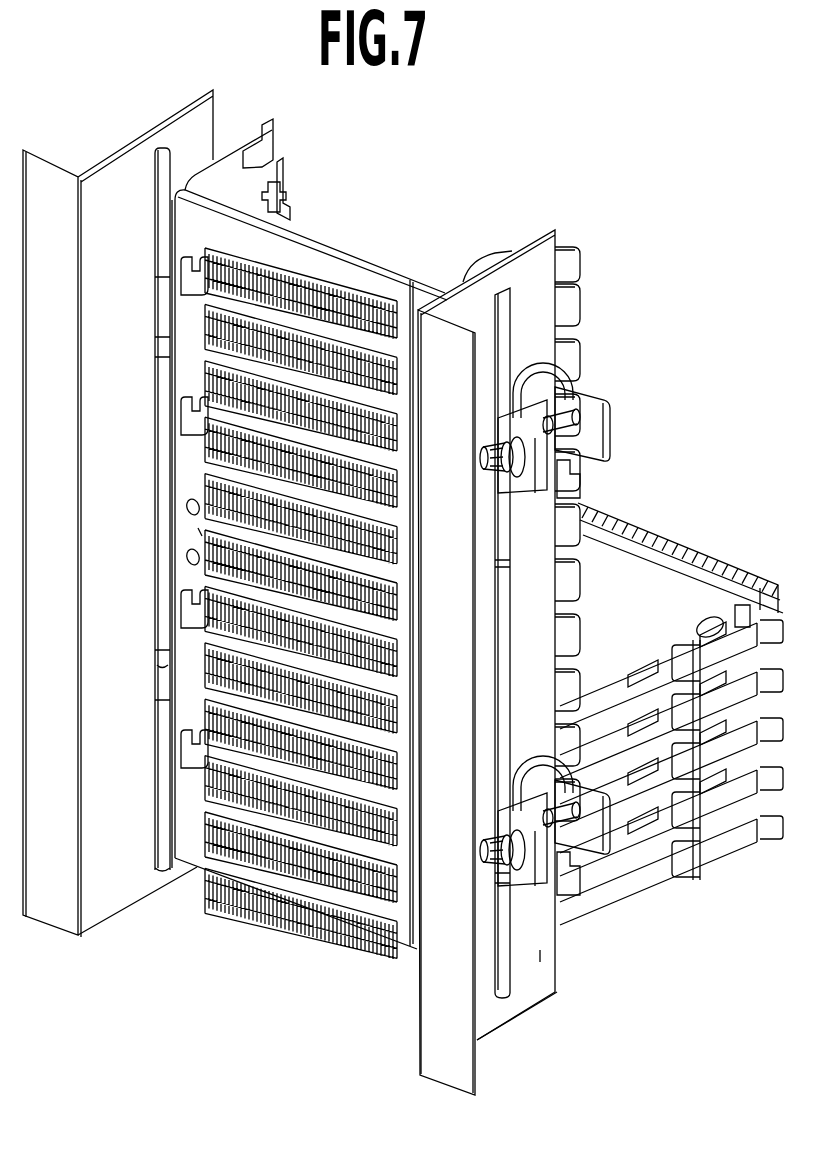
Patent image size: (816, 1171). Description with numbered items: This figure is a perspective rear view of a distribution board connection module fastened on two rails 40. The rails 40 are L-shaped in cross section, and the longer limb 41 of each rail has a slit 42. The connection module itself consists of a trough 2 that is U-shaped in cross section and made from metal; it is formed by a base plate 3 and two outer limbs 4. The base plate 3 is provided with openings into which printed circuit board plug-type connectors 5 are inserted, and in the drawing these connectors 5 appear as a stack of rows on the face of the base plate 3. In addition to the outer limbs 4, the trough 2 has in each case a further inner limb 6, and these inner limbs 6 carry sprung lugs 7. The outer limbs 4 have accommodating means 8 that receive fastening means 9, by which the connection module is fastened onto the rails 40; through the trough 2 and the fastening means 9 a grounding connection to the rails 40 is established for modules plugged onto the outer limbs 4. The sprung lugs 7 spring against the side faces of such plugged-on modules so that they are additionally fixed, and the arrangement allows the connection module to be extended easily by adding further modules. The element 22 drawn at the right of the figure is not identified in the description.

The trough 2 is at (336, 208).
The base plate 3 is at (407, 305).
The limbs 4 is at (263, 133).
The printed circuit board plug-type connectors 5 is at (328, 300).
The inner limb 6 is at (247, 188).
The sprung lugs 7 is at (277, 178).
The accommodating means 8 is at (600, 820).
The fastening means 9 is at (557, 877).
The cable tray 22 is at (702, 538).
The rails 40 is at (103, 181).
The longer limb 41 is at (541, 955).
The slit 42 is at (505, 984).